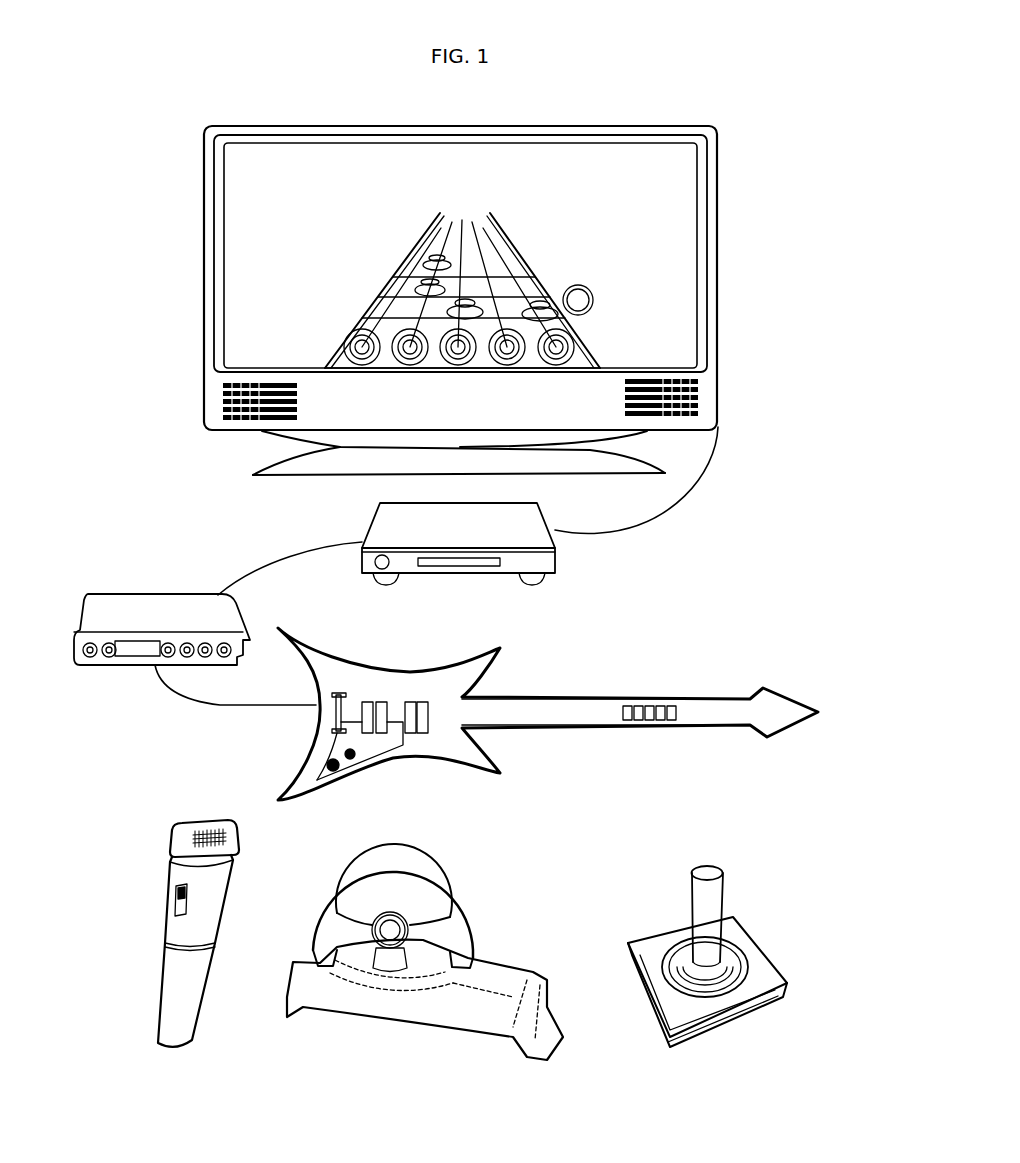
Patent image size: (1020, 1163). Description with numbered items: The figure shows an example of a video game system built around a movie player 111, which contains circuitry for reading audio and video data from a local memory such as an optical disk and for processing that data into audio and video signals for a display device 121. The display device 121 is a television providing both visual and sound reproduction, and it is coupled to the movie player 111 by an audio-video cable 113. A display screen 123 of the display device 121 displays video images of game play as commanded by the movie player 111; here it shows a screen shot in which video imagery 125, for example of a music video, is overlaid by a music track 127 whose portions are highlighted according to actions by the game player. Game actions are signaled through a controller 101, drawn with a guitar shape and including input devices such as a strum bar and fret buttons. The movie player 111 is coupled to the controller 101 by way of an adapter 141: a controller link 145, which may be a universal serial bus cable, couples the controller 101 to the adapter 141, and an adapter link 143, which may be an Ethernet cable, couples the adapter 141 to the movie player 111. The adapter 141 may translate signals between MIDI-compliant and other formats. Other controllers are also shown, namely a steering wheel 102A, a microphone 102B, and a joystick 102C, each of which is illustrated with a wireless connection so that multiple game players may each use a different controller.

The controller 101 is at (523, 727).
The steering wheel 102A is at (553, 1040).
The microphone 102B is at (168, 912).
The joystick 102C is at (790, 983).
The movie player 111 is at (553, 572).
The audio-video cable 113 is at (662, 507).
The display device 121 is at (205, 385).
The display screen 123 is at (227, 259).
The video imagery 125 is at (673, 292).
The music track 127 is at (488, 293).
The adapter 141 is at (160, 593).
The adapter link 143 is at (290, 555).
The controller link 145 is at (173, 688).